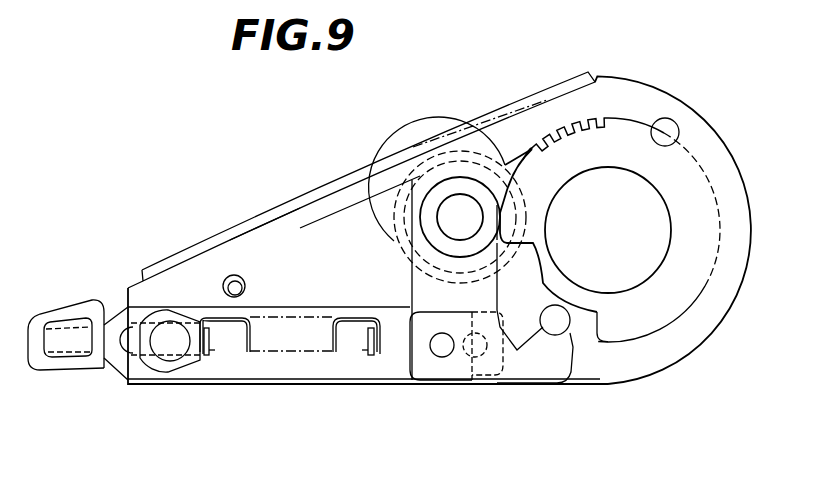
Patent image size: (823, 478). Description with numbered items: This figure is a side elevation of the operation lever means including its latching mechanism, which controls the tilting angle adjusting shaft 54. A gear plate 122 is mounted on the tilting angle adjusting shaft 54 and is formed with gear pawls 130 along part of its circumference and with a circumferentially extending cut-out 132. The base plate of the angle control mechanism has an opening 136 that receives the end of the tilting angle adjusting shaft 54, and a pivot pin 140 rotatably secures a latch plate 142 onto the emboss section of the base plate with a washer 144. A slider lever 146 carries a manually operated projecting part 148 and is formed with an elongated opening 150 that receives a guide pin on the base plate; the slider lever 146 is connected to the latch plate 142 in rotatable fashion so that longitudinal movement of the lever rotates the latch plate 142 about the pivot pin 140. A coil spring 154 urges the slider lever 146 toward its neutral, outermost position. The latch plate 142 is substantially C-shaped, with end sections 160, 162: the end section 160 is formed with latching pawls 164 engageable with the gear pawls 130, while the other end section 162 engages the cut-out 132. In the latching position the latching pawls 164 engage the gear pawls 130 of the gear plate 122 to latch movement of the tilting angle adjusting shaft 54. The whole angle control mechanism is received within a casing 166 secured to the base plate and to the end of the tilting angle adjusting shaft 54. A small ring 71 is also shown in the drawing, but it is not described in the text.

The tilting angle adjusting shaft 54 is at (657, 252).
The pin 71 is at (233, 275).
The gear plate 122 is at (690, 165).
The gear pawls 130 is at (588, 118).
The cut-out 132 is at (597, 322).
The opening 136 is at (320, 223).
The pivot pin 140 is at (457, 210).
The latch plate 142 is at (427, 300).
The washer 144 is at (428, 217).
The slider lever 146 is at (293, 372).
The manually operated projecting part 148 is at (77, 300).
The elongated opening 150 is at (128, 352).
The coil spring 154 is at (250, 313).
The end section 160 is at (520, 125).
The end section 162 is at (523, 370).
The latching pawls 164 is at (553, 130).
The casing 166 is at (263, 220).